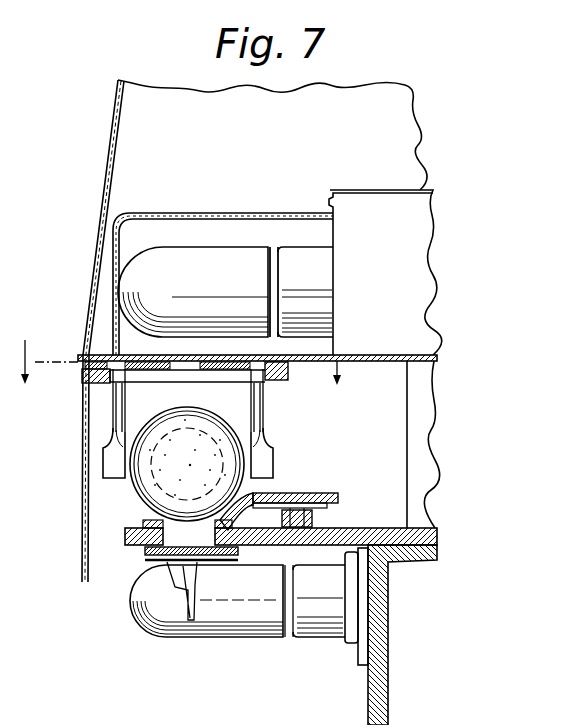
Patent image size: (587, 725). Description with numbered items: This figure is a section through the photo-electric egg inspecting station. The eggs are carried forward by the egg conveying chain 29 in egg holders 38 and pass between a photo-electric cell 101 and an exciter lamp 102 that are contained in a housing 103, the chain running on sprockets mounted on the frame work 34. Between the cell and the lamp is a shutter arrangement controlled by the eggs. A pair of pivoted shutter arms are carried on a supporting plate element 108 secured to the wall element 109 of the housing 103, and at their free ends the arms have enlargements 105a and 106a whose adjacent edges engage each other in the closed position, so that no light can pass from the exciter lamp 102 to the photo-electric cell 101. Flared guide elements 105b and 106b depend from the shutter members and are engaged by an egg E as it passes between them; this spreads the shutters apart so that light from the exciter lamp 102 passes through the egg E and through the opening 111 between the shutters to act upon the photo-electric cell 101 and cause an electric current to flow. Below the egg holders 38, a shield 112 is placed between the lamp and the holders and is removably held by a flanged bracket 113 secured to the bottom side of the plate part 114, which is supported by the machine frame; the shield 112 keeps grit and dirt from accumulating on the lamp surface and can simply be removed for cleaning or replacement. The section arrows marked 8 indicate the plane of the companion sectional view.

The housing 103 is at (104, 163).
The photo-electric cell 101 is at (138, 287).
The enlargement of shutter member 106a is at (217, 357).
The enlargement of shutter member 105a is at (157, 357).
The wall element 109 is at (376, 353).
The section line 8- 8 is at (178, 377).
The opening between the shutters 111 is at (183, 370).
The supporting plate element 108 is at (275, 382).
The flared guide element 105b is at (117, 473).
The flared guide element 106b is at (266, 453).
The egg E is at (157, 424).
The egg holder 38 is at (252, 497).
The egg conveying chain 29 is at (310, 518).
The plate part 114 is at (343, 532).
The flanged bracket 113 is at (238, 553).
The shield 112 is at (150, 550).
The exciter lamp 102 is at (152, 625).
The frame work 34 is at (397, 563).